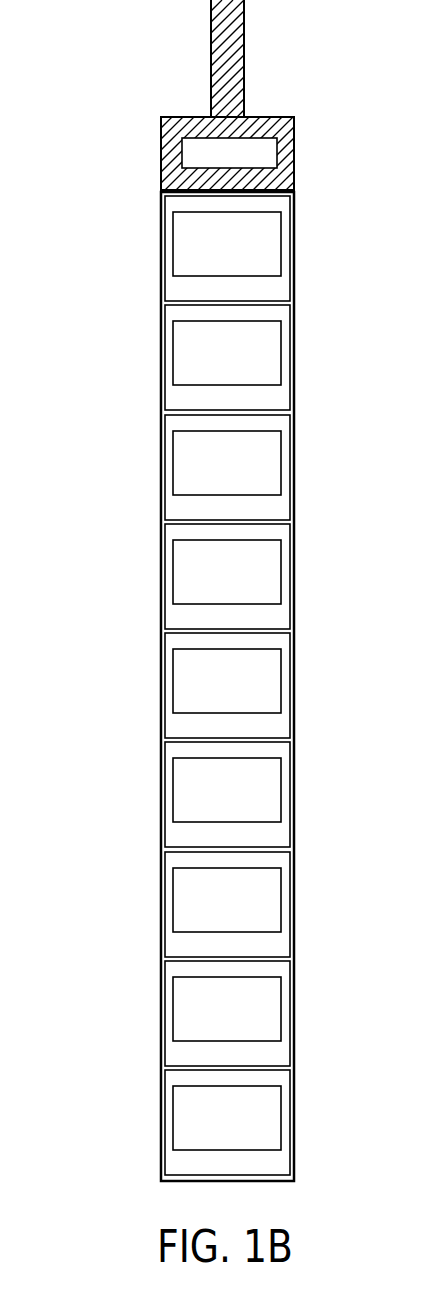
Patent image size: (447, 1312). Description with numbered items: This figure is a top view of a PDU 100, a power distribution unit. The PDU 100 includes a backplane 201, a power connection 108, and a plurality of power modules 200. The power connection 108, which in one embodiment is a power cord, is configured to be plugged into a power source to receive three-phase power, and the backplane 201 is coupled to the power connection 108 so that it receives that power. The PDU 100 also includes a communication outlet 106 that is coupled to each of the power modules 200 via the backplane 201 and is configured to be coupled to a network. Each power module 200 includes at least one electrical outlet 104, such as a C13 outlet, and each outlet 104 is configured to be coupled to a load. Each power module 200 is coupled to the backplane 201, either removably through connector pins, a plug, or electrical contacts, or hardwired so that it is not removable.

The PDU 100 is at (98, 255).
The electrical outlet 104 is at (277, 222).
The communication outlet 106 is at (187, 143).
The power connection 108 is at (244, 23).
The power module 200 is at (173, 252).
The backplane 201 is at (167, 155).